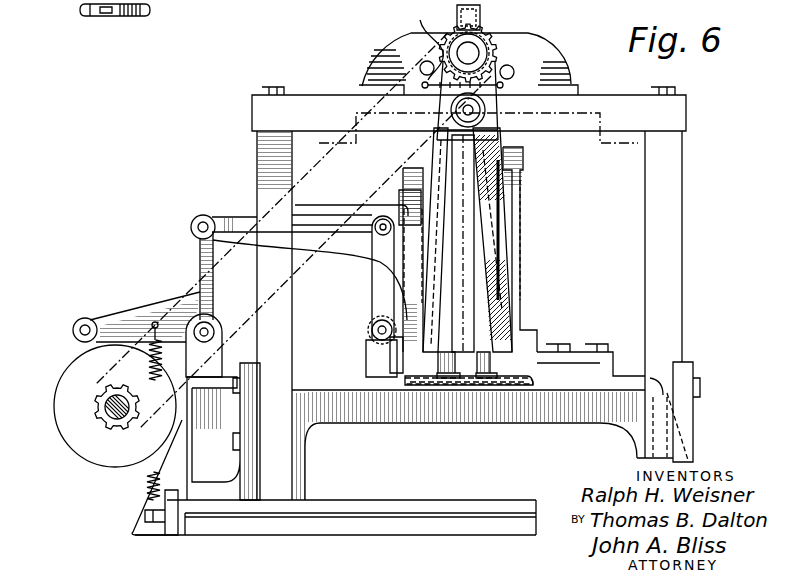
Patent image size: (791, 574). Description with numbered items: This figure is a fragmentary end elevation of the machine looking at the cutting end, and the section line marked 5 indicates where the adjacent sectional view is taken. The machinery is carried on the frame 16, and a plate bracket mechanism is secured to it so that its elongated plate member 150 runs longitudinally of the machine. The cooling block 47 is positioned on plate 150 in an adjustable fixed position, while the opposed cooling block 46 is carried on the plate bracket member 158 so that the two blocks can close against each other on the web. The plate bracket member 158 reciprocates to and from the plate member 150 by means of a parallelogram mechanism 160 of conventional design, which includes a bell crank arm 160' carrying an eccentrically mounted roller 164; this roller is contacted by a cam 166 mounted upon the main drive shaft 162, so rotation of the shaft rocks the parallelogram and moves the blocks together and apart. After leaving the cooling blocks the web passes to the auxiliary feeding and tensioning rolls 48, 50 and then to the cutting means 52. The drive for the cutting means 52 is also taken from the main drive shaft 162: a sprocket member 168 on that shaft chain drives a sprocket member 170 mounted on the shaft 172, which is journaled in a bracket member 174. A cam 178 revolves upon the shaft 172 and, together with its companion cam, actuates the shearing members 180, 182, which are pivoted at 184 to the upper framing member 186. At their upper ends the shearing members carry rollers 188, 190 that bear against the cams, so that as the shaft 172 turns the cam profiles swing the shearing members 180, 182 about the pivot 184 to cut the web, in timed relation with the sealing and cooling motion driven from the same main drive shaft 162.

The section line 5- 5 is at (88, 97).
The frame 16 is at (436, 484).
The cooling block 46 is at (402, 173).
The cooling block 47 is at (471, 354).
The auxiliary feeding and tensioning roll 48 is at (448, 343).
The auxiliary feeding and tensioning roll 50 is at (481, 316).
The cutting means 52 is at (496, 265).
The elongated plate member 150 is at (522, 197).
The plate bracket member 158 is at (372, 197).
The parallelogram mechanism 160 is at (279, 273).
The bell crank arm 160' is at (145, 306).
The main drive shaft 162 is at (117, 420).
The eccentrically mounted roller 164 is at (86, 318).
The cam 166 is at (65, 367).
The sprocket member 168 is at (84, 10).
The sprocket member 170 is at (470, 53).
The shaft 172 is at (488, 52).
The bracket member 174 is at (545, 80).
The cam 178 is at (457, 20).
The shearing member 180 is at (436, 272).
The shearing member 182 is at (490, 237).
The pivot 184 is at (487, 111).
The upper framing member 186 is at (328, 84).
The roller 188 is at (419, 32).
The roller 190 is at (549, 51).